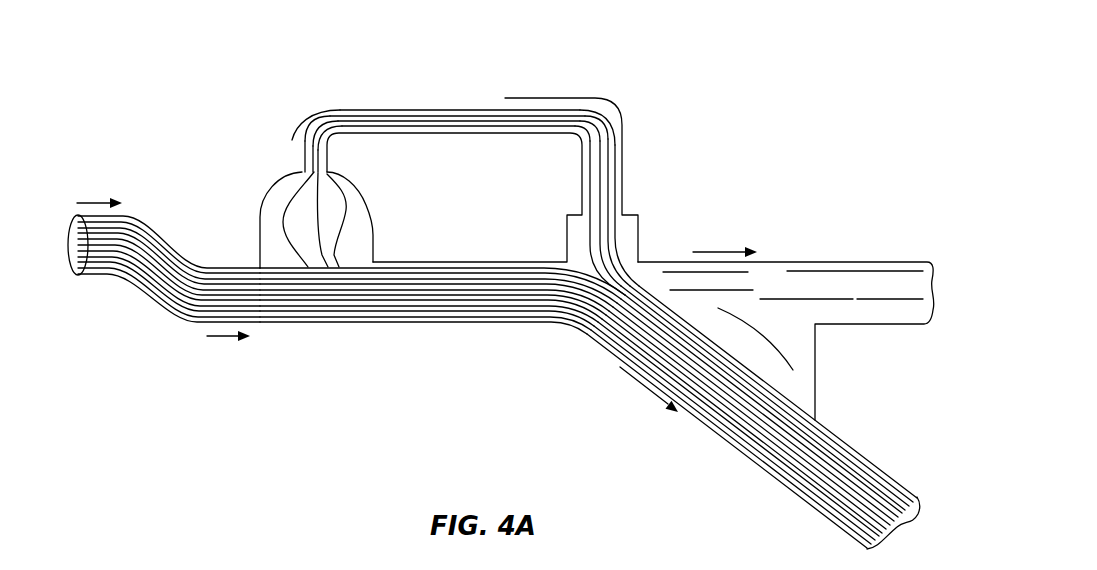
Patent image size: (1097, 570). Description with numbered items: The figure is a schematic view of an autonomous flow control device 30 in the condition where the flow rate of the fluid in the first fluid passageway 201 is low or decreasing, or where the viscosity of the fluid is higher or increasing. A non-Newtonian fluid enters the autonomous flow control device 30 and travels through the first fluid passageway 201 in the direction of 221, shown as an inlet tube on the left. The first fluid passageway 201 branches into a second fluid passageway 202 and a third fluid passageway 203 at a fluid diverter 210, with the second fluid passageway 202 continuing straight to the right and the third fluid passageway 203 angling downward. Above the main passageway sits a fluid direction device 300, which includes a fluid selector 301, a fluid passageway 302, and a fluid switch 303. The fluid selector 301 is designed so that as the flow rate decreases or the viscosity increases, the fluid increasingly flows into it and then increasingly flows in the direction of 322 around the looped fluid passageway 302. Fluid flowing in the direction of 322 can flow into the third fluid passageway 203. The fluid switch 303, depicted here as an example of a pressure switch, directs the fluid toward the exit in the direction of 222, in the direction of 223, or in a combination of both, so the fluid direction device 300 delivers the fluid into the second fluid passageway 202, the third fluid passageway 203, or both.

The autonomous flow control device 30 is at (137, 50).
The first fluid passageway 201 is at (170, 243).
The second fluid passageway 202 is at (843, 261).
The third fluid passageway 203 is at (807, 503).
The fluid diverter 210 is at (885, 383).
The flow direction through first fluid passageway 221 is at (92, 200).
The flow direction into exit assembly via second passageway 222 is at (719, 252).
The flow direction into exit assembly via third passageway 223 is at (638, 388).
The fluid direction device 300 is at (590, 74).
The fluid selector 301 is at (280, 192).
The fluid passageway 302 is at (438, 108).
The fluid switch 303 is at (592, 296).
The flow direction through fluid direction device 322 is at (355, 100).